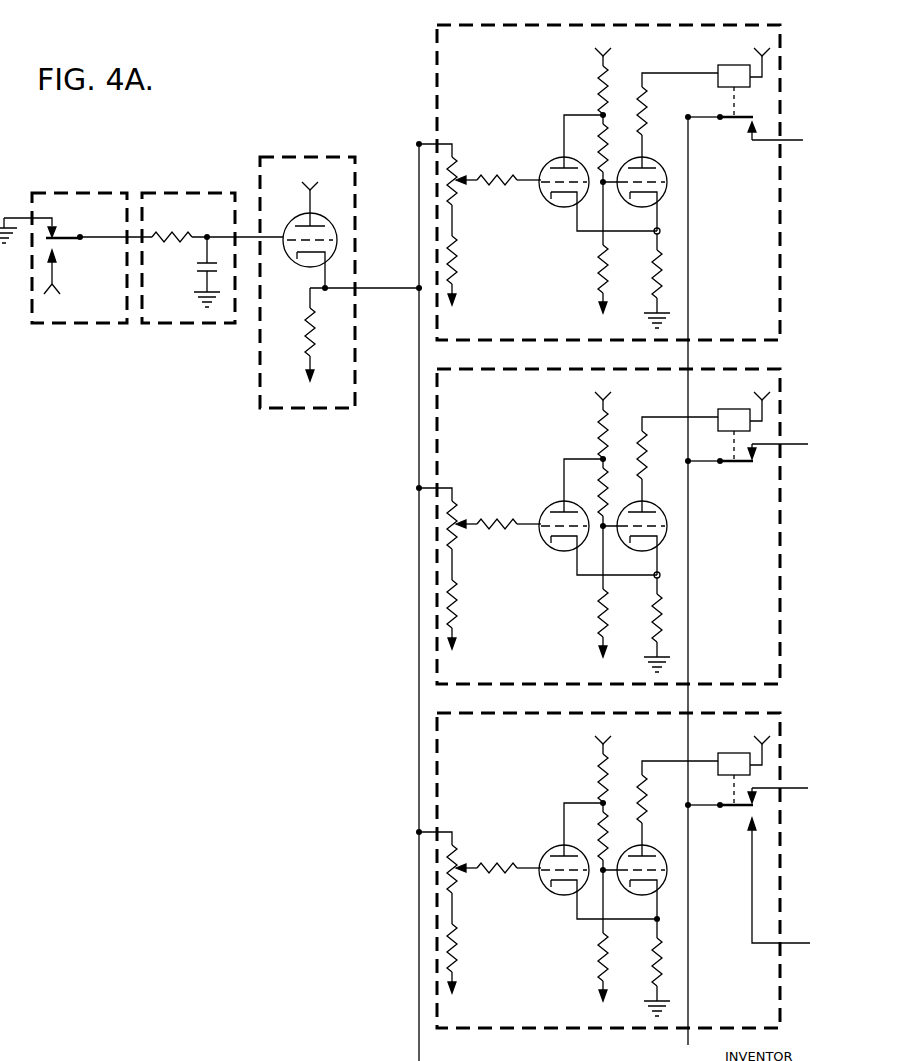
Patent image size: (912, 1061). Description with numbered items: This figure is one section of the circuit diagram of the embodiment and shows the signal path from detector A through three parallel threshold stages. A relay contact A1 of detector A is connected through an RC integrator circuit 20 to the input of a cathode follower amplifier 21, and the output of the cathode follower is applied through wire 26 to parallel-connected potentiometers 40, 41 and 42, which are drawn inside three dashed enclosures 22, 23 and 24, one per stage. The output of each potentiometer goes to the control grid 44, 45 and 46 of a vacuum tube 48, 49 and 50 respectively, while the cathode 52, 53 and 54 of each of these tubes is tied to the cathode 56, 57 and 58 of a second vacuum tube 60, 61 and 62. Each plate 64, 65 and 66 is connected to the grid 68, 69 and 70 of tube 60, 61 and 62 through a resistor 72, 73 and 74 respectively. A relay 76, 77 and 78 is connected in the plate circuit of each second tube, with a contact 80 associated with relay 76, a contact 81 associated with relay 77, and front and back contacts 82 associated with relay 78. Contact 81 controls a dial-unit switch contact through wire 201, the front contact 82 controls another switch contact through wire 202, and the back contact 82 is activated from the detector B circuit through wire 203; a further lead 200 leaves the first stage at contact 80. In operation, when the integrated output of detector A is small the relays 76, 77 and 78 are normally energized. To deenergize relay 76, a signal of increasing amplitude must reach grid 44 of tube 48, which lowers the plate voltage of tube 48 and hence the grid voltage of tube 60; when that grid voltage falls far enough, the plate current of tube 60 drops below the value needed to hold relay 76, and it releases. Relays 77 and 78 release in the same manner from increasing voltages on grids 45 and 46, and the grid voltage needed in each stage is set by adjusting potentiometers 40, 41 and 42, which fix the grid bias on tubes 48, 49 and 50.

The detector A is at (37, 196).
The relay contact A1 is at (62, 240).
The RC integrator circuit 20 is at (190, 193).
The cathode follower amplifier 21 is at (260, 190).
The first trigger circuit 22 is at (437, 50).
The second trigger circuit 23 is at (612, 514).
The third trigger circuit 24 is at (613, 859).
The wire 26 is at (419, 548).
The potentiometer 40 is at (459, 176).
The potentiometer 41 is at (464, 581).
The potentiometer 42 is at (468, 919).
The control grid 44 is at (545, 186).
The control grid 45 is at (512, 539).
The control grid 46 is at (515, 883).
The vacuum tube 48 is at (553, 161).
The vacuum tube 49 is at (593, 521).
The vacuum tube 50 is at (595, 862).
The cathode 52 is at (560, 199).
The cathode 53 is at (599, 559).
The cathode 54 is at (601, 901).
The cathode 56 is at (659, 197).
The cathode 57 is at (662, 606).
The cathode 58 is at (665, 950).
The second vacuum tube 60 is at (654, 163).
The second vacuum tube 61 is at (667, 497).
The second vacuum tube 62 is at (667, 841).
The plate 64 is at (568, 164).
The plate 65 is at (576, 485).
The plate 66 is at (576, 829).
The grid 68 is at (631, 197).
The grid 69 is at (612, 605).
The grid 70 is at (614, 949).
The resistor 72 is at (606, 154).
The resistor 73 is at (615, 481).
The resistor 74 is at (618, 833).
The relay 76 is at (718, 66).
The relay 77 is at (738, 416).
The relay 78 is at (741, 760).
The contact 80 is at (742, 117).
The relay contact 81 is at (719, 476).
The front and back contacts 82 is at (719, 818).
The output lead 200 is at (792, 142).
The wire 201 is at (778, 440).
The wire 202 is at (778, 786).
The wire 203 is at (759, 880).